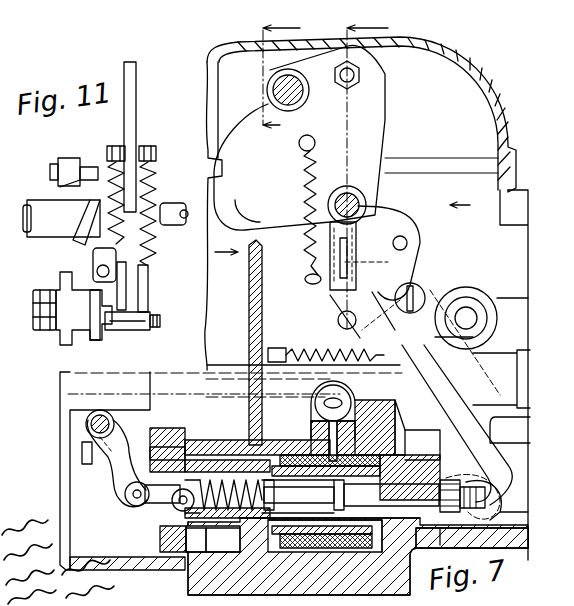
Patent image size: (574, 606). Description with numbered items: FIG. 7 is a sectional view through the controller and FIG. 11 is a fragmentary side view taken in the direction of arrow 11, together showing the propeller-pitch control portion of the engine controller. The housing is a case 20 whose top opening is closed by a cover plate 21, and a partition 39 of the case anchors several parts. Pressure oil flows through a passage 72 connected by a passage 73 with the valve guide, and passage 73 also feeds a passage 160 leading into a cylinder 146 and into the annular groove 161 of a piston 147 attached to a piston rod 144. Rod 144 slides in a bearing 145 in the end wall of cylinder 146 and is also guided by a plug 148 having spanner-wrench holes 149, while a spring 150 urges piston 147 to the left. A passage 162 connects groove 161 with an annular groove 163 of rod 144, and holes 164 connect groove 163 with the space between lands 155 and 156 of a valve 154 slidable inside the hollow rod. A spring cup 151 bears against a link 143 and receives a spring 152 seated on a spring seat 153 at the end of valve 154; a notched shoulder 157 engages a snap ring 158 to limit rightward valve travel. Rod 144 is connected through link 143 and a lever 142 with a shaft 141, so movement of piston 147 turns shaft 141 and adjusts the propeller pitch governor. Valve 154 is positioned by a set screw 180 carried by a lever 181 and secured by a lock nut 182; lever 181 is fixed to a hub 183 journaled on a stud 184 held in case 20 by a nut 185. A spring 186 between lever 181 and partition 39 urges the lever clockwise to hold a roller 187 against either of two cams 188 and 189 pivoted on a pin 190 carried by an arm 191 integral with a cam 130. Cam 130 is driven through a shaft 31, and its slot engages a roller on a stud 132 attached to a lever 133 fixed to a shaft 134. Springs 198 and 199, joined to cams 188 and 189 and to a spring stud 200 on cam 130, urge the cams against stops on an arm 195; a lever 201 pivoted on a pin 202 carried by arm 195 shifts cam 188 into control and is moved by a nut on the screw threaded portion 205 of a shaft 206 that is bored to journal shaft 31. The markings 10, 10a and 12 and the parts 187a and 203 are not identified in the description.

In FIG. 7, the section line 10 is at (526, 551).
In FIG. 7, the section line 10a is at (283, 78).
In FIG. 7, the arrow 11 is at (225, 253).
In FIG. 7, the section line 12 is at (465, 205).
In FIG. 11, the case 20 is at (70, 158).
In FIG. 7, the cover plate 21 is at (463, 62).
In FIG. 11, the shaft 31 is at (178, 204).
In FIG. 7, the shaft 31 is at (567, 191).
In FIG. 7, the partition 39 is at (264, 266).
In FIG. 7, the passage 72 is at (66, 393).
In FIG. 7, the passage 73 is at (352, 392).
In FIG. 11, the cam 130 is at (137, 95).
In FIG. 7, the cam 130 is at (385, 100).
In FIG. 7, the stud 132 is at (347, 90).
In FIG. 7, the lever 133 is at (268, 80).
In FIG. 7, the shaft 134 is at (273, 92).
In FIG. 7, the shaft 141 is at (86, 426).
In FIG. 7, the lever 142 is at (110, 488).
In FIG. 7, the link 143 is at (140, 506).
In FIG. 7, the piston rod 144 is at (227, 483).
In FIG. 7, the bearing 145 is at (400, 458).
In FIG. 7, the cylinder 146 is at (236, 440).
In FIG. 7, the piston 147 is at (405, 408).
In FIG. 7, the plug 148 is at (172, 430).
In FIG. 7, the spanner-wrench holes 149 is at (155, 456).
In FIG. 7, the spring 150 is at (405, 426).
In FIG. 7, the spring cup 151 is at (208, 528).
In FIG. 7, the spring 152 is at (224, 528).
In FIG. 7, the spring seat 153 is at (236, 548).
In FIG. 7, the valve 154 is at (445, 478).
In FIG. 7, the land 155 is at (274, 494).
In FIG. 7, the land 156 is at (345, 495).
In FIG. 7, the notched shoulder 157 is at (501, 489).
In FIG. 7, the snap ring 158 is at (446, 540).
In FIG. 7, the passage 160 is at (328, 430).
In FIG. 7, the annular groove 161 is at (370, 404).
In FIG. 7, the passage 162 is at (275, 458).
In FIG. 7, the annular groove 163 is at (410, 434).
In FIG. 7, the holes 164 is at (262, 566).
In FIG. 7, the set screw 180 is at (505, 500).
In FIG. 7, the lever 181 is at (450, 380).
In FIG. 7, the lock nut 182 is at (515, 470).
In FIG. 11, the hub 183 is at (88, 333).
In FIG. 11, the stud 184 is at (100, 300).
In FIG. 7, the stud 184 is at (418, 288).
In FIG. 11, the nut 185 is at (48, 290).
In FIG. 7, the spring 186 is at (296, 342).
In FIG. 11, the roller 187 is at (122, 332).
In FIG. 7, the roller 187 is at (338, 320).
In FIG. 11, the screw 187a is at (160, 322).
In FIG. 11, the cam 188 is at (149, 300).
In FIG. 7, the cam 188 is at (306, 280).
In FIG. 11, the cam 189 is at (127, 321).
In FIG. 7, the pin 190 is at (408, 244).
In FIG. 7, the arm 191 is at (380, 205).
In FIG. 7, the arm 195 is at (338, 185).
In FIG. 11, the spring 198 is at (158, 247).
In FIG. 7, the spring 198 is at (304, 194).
In FIG. 11, the spring 199 is at (112, 164).
In FIG. 11, the spring stud 200 is at (152, 146).
In FIG. 7, the spring stud 200 is at (300, 148).
In FIG. 7, the lever 201 is at (362, 248).
In FIG. 7, the pin 202 is at (370, 268).
In FIG. 11, the screw 203 is at (60, 186).
In FIG. 11, the screw threaded portion 205 is at (82, 246).
In FIG. 11, the shaft 206 is at (35, 238).